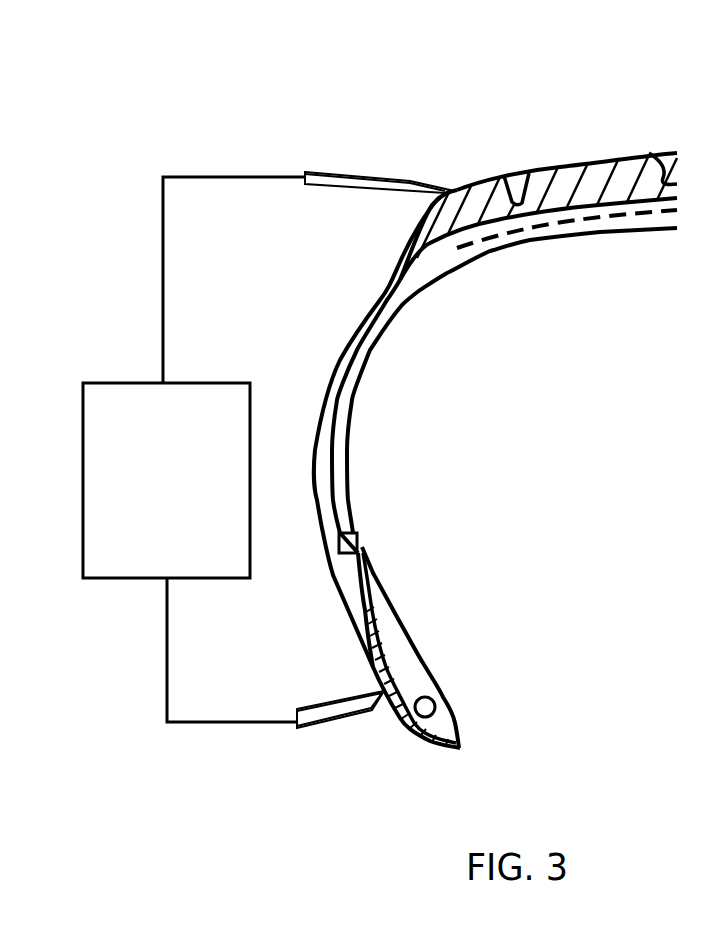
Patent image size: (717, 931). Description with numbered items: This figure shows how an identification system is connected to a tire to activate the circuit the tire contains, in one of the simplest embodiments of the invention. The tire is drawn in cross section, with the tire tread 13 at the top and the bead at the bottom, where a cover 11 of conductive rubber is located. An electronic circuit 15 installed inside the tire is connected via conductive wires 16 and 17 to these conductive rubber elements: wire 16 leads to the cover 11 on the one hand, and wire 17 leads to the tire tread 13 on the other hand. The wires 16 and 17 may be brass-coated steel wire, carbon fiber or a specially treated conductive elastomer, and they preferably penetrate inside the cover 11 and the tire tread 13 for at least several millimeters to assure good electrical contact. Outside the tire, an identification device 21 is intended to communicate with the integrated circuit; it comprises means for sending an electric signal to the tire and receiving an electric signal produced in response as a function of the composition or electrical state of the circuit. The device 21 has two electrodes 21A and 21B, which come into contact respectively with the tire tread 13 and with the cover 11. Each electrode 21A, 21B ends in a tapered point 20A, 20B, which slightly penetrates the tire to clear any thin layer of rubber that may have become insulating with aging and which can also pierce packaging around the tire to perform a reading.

The cover 11 is at (372, 663).
The tire tread 13 is at (563, 164).
The electronic circuit 15 is at (360, 540).
The conductive wire 16 is at (357, 585).
The conductive wire 17 is at (360, 333).
The tapered point 20A is at (449, 186).
The tapered point 20B is at (382, 699).
The identification device 21 is at (207, 381).
The electrode 21A is at (369, 173).
The electrode 21B is at (342, 717).